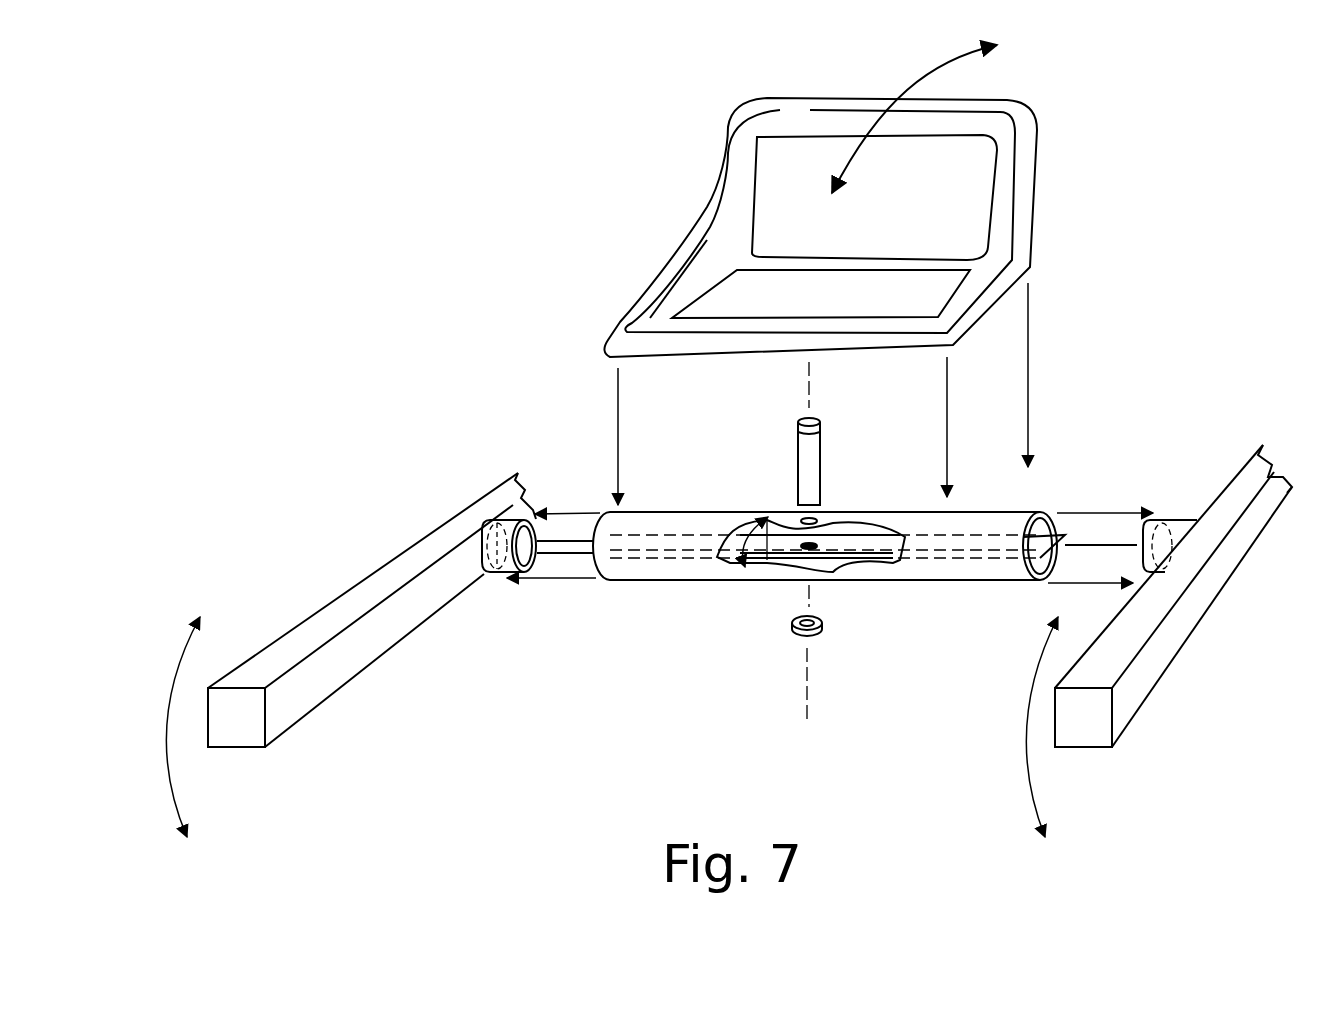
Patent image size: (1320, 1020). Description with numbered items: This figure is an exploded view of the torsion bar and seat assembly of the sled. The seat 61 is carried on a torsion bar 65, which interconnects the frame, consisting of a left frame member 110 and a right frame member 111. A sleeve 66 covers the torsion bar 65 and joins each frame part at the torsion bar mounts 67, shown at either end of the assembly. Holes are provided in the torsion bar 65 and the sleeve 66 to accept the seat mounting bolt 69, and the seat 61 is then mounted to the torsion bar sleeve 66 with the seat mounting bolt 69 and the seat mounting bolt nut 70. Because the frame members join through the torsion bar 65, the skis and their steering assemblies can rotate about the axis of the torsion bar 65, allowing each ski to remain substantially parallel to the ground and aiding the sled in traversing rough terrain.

The seat 61 is at (827, 98).
The torsion bar 65 is at (1067, 537).
The sleeve 66 is at (1030, 510).
The torsion bar mounts 67 is at (493, 575).
The seat mounting bolt 69 is at (797, 463).
The seat mounting bolt nut 70 is at (797, 635).
The left frame member 110 is at (1152, 693).
The right frame member 111 is at (397, 557).